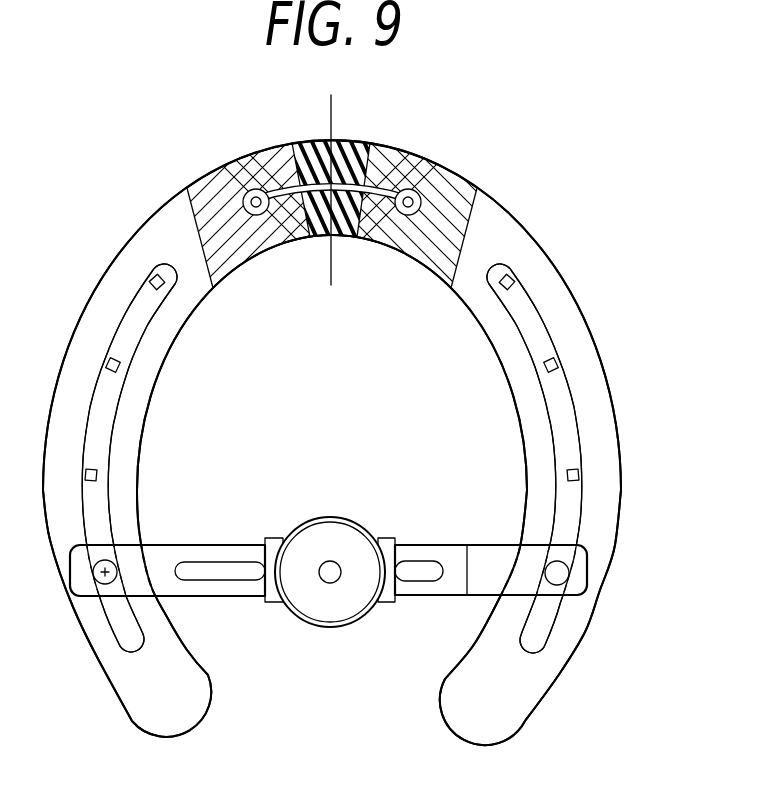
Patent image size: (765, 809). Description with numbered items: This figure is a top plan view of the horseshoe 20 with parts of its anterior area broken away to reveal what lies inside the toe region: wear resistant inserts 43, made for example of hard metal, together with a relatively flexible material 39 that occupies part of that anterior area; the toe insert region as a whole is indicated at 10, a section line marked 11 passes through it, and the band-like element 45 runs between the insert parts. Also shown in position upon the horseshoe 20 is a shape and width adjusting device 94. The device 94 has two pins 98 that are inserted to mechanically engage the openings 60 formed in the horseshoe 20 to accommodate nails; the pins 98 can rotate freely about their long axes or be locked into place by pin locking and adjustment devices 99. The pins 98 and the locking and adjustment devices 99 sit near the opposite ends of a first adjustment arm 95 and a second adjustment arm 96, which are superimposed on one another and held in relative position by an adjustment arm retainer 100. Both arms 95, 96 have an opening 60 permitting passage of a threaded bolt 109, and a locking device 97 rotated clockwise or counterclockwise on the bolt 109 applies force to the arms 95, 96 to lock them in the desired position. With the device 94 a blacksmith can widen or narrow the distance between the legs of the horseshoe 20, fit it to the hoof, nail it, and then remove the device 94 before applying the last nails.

The horseshoe 20 is at (578, 266).
The toe insert 10 is at (338, 213).
The section line 11- 11 is at (332, 279).
The relatively flexible material 39 is at (298, 145).
The insert spring band 45 is at (340, 143).
The wear resistant inserts 43 is at (400, 153).
The shape and width adjusting device 94 is at (295, 501).
The locking device 97 is at (353, 525).
The first adjustment arm 95 is at (488, 562).
The pin locking and adjustment devices 99 is at (568, 570).
The pins 98 is at (80, 578).
The openings 60 is at (202, 572).
The second adjustment arm 96 is at (233, 600).
The adjustment arm retainer 100 is at (397, 572).
The threaded bolt 109 is at (330, 585).